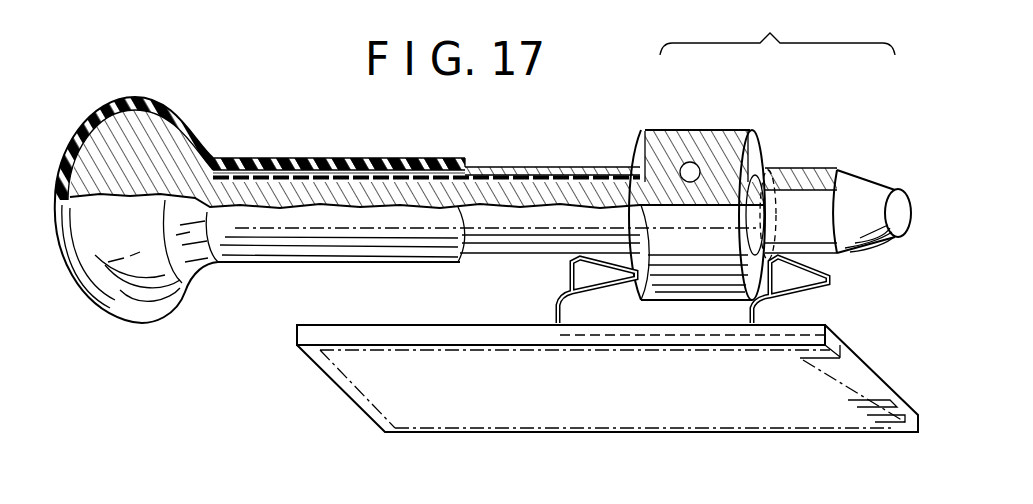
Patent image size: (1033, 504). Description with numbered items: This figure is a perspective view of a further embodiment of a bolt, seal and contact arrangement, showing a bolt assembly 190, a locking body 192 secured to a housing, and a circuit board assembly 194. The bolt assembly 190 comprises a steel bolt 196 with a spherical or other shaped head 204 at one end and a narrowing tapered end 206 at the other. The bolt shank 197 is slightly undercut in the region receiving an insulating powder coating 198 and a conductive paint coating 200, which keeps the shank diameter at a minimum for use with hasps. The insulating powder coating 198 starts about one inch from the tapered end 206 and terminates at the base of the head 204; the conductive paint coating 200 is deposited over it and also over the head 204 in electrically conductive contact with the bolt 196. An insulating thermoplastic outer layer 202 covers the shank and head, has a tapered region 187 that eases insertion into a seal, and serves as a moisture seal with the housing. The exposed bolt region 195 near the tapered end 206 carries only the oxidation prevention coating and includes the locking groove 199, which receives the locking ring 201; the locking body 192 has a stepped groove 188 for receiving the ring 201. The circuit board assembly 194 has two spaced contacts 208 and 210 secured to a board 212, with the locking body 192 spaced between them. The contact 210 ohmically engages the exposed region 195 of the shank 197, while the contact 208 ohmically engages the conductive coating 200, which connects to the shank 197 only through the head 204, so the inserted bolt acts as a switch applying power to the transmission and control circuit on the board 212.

The tapered region 187 is at (412, 237).
The stepped groove 188 is at (700, 160).
The bolt assembly 190 is at (313, 122).
The locking body 192 is at (744, 122).
The circuit board assembly 194 is at (333, 400).
The exposed bolt region 195 is at (777, 27).
The steel bolt 196 is at (127, 150).
The bolt shank 197 is at (228, 190).
The insulating powder coating 198 is at (330, 182).
The locking groove 199 is at (680, 182).
The conductive paint coating 200 is at (520, 167).
The locking ring 201 is at (648, 133).
The thermoplastic outer layer 202 is at (440, 118).
The head 204 is at (138, 272).
The narrowing tapered end 206 is at (905, 190).
The contact 208 is at (572, 283).
The contact 210 is at (822, 296).
The board 212 is at (732, 432).